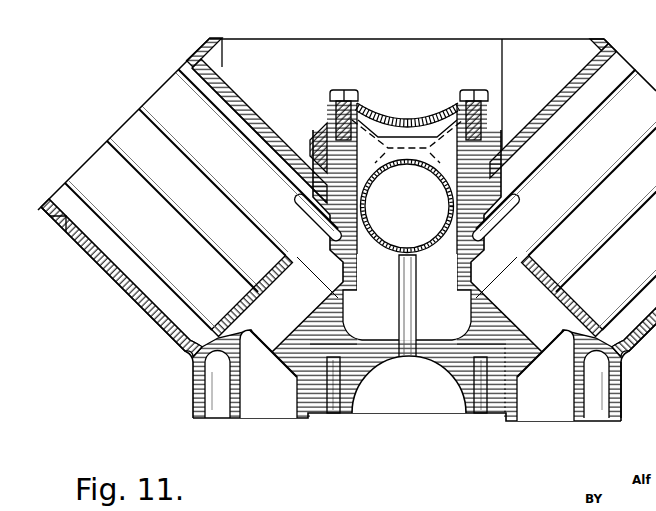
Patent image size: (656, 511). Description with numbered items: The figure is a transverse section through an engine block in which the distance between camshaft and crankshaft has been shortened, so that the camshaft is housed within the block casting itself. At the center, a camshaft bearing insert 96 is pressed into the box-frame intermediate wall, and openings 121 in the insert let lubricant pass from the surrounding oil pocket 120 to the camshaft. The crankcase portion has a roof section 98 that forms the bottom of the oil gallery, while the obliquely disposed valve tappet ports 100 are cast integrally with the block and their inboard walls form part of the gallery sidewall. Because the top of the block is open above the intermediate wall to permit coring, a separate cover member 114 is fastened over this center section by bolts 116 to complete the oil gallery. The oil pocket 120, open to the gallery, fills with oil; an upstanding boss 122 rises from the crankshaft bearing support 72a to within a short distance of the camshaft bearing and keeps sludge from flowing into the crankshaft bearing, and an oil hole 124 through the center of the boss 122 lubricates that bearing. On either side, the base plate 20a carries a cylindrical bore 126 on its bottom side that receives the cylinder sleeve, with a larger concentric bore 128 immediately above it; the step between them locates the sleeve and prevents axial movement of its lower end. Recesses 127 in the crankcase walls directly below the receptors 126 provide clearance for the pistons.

The base plate 20a is at (230, 329).
The crankshaft bearing support 72a is at (457, 388).
The camshaft bearing inserts 96 is at (440, 233).
The roof section 98 is at (410, 138).
The valve tappet ports 100 is at (322, 135).
The cover member 114 is at (385, 105).
The bolts 116 is at (343, 88).
The oil pocket 120 is at (438, 331).
The openings 121 is at (408, 163).
The bosses 122 is at (414, 273).
The oil hole 124 is at (403, 303).
The cylindrical bore 126 is at (281, 322).
The recesses 127 is at (332, 338).
The concentric bore 128 is at (300, 243).